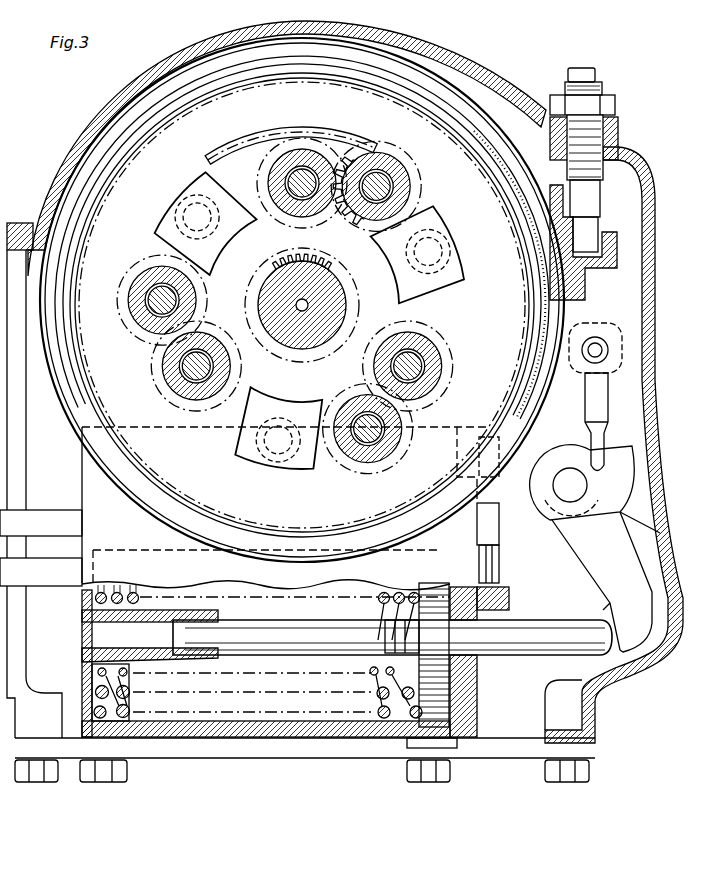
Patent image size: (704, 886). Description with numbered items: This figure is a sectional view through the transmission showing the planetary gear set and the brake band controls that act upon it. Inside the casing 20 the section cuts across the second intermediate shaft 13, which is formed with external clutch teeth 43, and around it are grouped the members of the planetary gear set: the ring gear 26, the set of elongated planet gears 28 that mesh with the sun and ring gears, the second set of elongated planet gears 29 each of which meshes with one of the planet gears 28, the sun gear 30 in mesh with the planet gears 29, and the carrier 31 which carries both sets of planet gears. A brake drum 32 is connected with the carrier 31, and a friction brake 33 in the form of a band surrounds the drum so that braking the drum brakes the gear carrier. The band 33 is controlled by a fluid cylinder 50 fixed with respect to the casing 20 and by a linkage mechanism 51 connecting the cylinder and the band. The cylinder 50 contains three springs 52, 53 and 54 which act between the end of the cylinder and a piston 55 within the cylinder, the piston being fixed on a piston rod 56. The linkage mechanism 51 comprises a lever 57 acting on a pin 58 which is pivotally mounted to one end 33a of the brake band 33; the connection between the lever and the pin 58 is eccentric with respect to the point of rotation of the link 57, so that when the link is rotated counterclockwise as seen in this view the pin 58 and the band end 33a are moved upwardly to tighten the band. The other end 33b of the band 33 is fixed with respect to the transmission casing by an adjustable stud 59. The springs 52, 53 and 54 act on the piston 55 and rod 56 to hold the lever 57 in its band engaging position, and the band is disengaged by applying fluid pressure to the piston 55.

The casing 20 is at (66, 152).
The friction brake 33 is at (410, 72).
The end of brake band 33a is at (622, 352).
The other end of brake band 33b is at (629, 255).
The brake drum 32 is at (133, 150).
The ring gear 26 is at (268, 127).
The elongated planet gears 28 is at (303, 157).
The elongated planet gears 29 is at (385, 162).
The sun gear 30 is at (360, 217).
The carrier 31 is at (429, 208).
The second intermediate shaft 13 is at (327, 273).
The external clutch teeth 43 is at (283, 247).
The adjustable stud 59 is at (597, 202).
The pin 58 is at (602, 408).
The linkage mechanism 51 is at (544, 523).
The lever 57 is at (592, 563).
The piston rod 56 is at (545, 626).
The piston 55 is at (442, 688).
The spring 54 is at (83, 670).
The spring 53 is at (85, 693).
The spring 52 is at (133, 723).
The fluid cylinder 50 is at (287, 737).